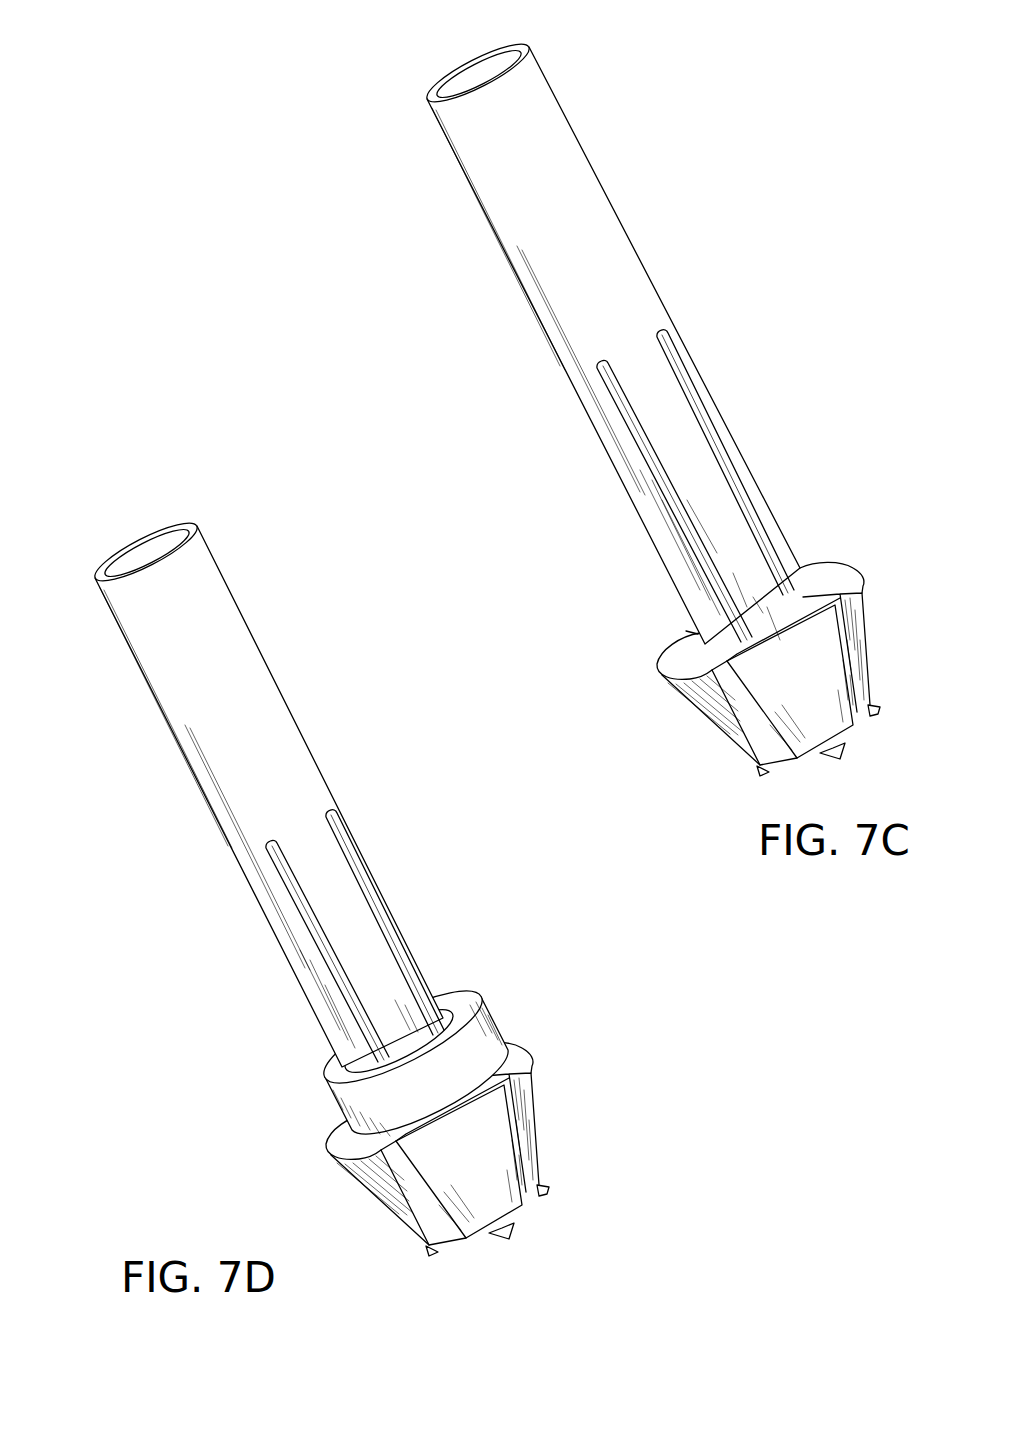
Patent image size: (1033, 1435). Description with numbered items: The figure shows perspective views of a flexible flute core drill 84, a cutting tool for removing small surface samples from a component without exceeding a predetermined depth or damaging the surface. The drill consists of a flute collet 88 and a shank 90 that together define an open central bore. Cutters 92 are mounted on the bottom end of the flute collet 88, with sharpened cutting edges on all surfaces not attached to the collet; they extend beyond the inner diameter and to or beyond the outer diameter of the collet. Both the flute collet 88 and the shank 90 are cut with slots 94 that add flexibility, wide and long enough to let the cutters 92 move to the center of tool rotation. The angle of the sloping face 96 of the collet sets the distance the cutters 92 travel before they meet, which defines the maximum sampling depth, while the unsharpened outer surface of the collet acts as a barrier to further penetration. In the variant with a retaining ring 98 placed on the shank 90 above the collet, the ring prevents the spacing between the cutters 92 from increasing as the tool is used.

In FIG. 7C, the flexible flute core drill 84 is at (660, 417).
In FIG. 7D, the flexible flute core drill 84 is at (338, 896).
In FIG. 7C, the flute collet 88 is at (705, 716).
In FIG. 7D, the flute collet 88 is at (395, 1161).
In FIG. 7C, the shank 90 is at (607, 202).
In FIG. 7D, the shank 90 is at (277, 678).
In FIG. 7C, the cutters 92 is at (880, 712).
In FIG. 7D, the cutters 92 is at (530, 1213).
In FIG. 7C, the slots 94 is at (640, 458).
In FIG. 7D, the slots 94 is at (300, 938).
In FIG. 7C, the sloping face 96 is at (863, 625).
In FIG. 7D, the sloping face 96 is at (476, 1117).
In FIG. 7D, the retaining ring 98 is at (484, 1049).